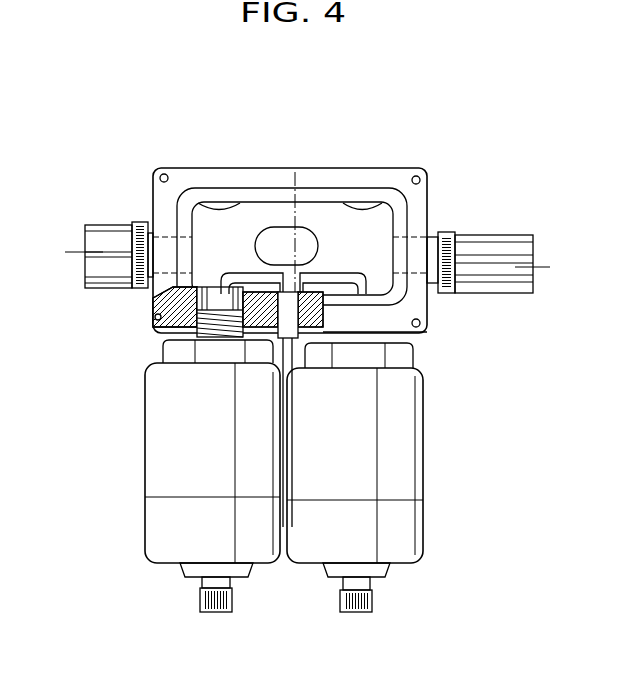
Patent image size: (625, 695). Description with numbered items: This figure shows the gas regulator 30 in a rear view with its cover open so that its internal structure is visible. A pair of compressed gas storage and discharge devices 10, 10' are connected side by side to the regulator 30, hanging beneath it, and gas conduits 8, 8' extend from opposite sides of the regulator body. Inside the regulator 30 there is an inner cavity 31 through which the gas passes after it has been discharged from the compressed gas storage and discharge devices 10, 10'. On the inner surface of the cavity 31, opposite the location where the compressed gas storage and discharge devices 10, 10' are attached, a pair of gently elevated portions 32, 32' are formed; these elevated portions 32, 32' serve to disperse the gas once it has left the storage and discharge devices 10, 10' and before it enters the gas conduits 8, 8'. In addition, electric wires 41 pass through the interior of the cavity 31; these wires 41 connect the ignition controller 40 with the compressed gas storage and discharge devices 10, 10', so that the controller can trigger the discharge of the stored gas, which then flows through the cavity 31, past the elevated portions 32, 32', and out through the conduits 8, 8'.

The gas regulator 30 is at (417, 203).
The inner cavity 31 is at (258, 210).
The gently elevated portion 32 is at (217, 170).
The gently elevated portion 32' is at (387, 172).
The electric wires 41 is at (340, 273).
The ignition controller 40 is at (290, 453).
The gas conduit 8 is at (109, 271).
The gas conduit 8' is at (488, 281).
The compressed gas storage and discharge device 10 is at (187, 476).
The compressed gas storage and discharge device 10' is at (384, 477).